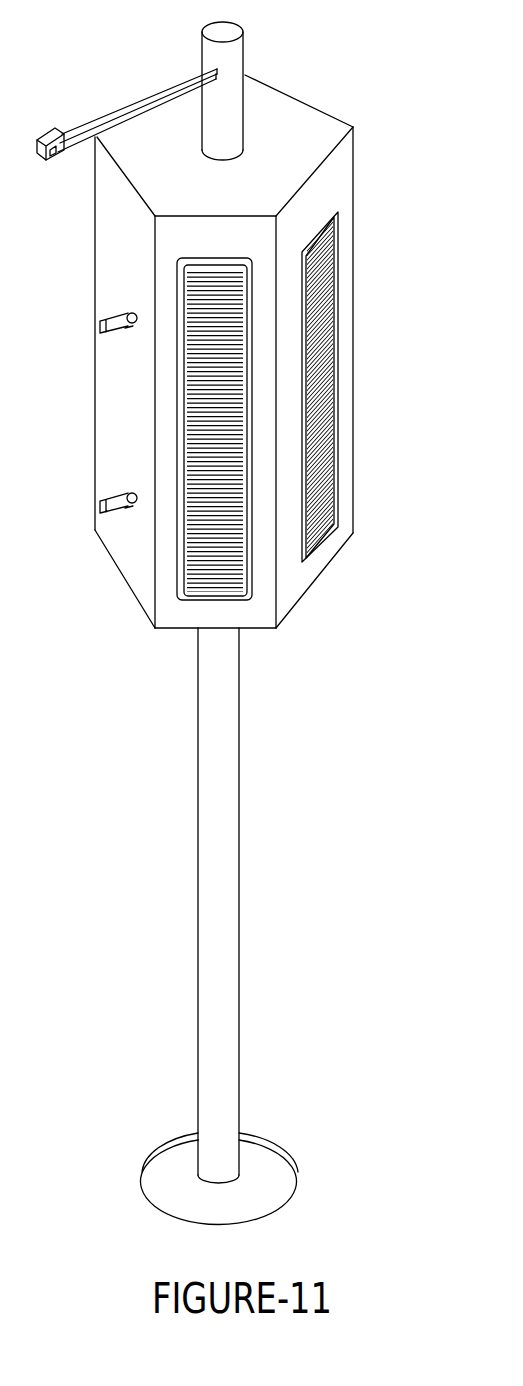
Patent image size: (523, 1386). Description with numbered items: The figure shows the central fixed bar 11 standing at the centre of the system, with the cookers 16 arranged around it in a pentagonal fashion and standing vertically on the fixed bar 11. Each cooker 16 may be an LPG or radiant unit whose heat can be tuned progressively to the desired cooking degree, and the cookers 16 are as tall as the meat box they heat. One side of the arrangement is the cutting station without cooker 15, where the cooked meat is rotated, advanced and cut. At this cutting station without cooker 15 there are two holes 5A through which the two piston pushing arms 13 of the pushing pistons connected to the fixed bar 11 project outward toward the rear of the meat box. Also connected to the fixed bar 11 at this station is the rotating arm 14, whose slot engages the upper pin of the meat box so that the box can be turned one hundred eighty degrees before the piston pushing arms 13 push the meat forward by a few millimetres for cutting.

The central fixed bar 11 is at (213, 831).
The piston pushing arm 13 is at (105, 327).
The rotating arm 14 is at (123, 113).
The cutting station without cooker 15 is at (118, 272).
The cooker 16 is at (330, 479).
The hole 5A is at (133, 332).